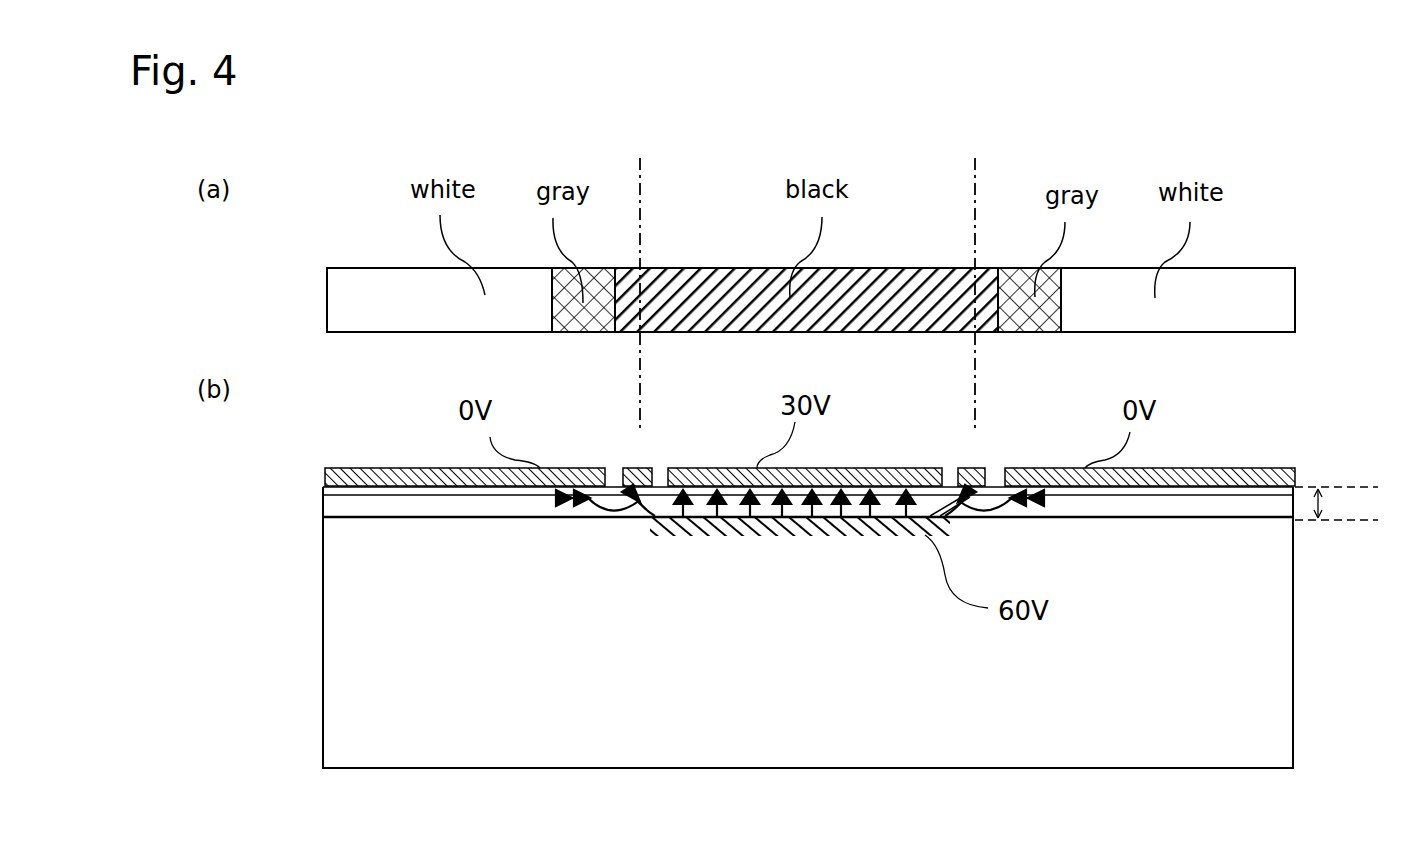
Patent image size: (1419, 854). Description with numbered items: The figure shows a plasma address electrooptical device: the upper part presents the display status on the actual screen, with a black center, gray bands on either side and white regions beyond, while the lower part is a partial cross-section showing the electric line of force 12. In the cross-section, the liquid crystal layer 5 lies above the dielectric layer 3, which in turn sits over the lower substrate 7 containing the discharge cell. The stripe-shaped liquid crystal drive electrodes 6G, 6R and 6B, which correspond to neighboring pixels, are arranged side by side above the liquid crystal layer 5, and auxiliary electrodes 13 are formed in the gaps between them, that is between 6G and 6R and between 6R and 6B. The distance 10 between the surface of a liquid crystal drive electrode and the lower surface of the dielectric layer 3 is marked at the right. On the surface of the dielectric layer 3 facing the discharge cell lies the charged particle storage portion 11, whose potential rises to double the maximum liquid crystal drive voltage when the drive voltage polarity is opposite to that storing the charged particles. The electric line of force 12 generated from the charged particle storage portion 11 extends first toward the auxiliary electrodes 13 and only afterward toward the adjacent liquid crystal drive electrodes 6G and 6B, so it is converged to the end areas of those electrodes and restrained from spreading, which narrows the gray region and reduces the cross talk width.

The dielectric layer 3 is at (350, 507).
The liquid crystal layer 5 is at (362, 492).
The lower substrate 7 is at (400, 710).
The distance 10 is at (1336, 507).
The charged particle storage portion 11 is at (950, 533).
The electric line of force 12 is at (1040, 505).
The auxiliary electrode 13 is at (648, 468).
The liquid crystal drive electrode 6G is at (445, 468).
The liquid crystal drive electrode 6R is at (860, 468).
The liquid crystal drive electrode 6B is at (1178, 468).